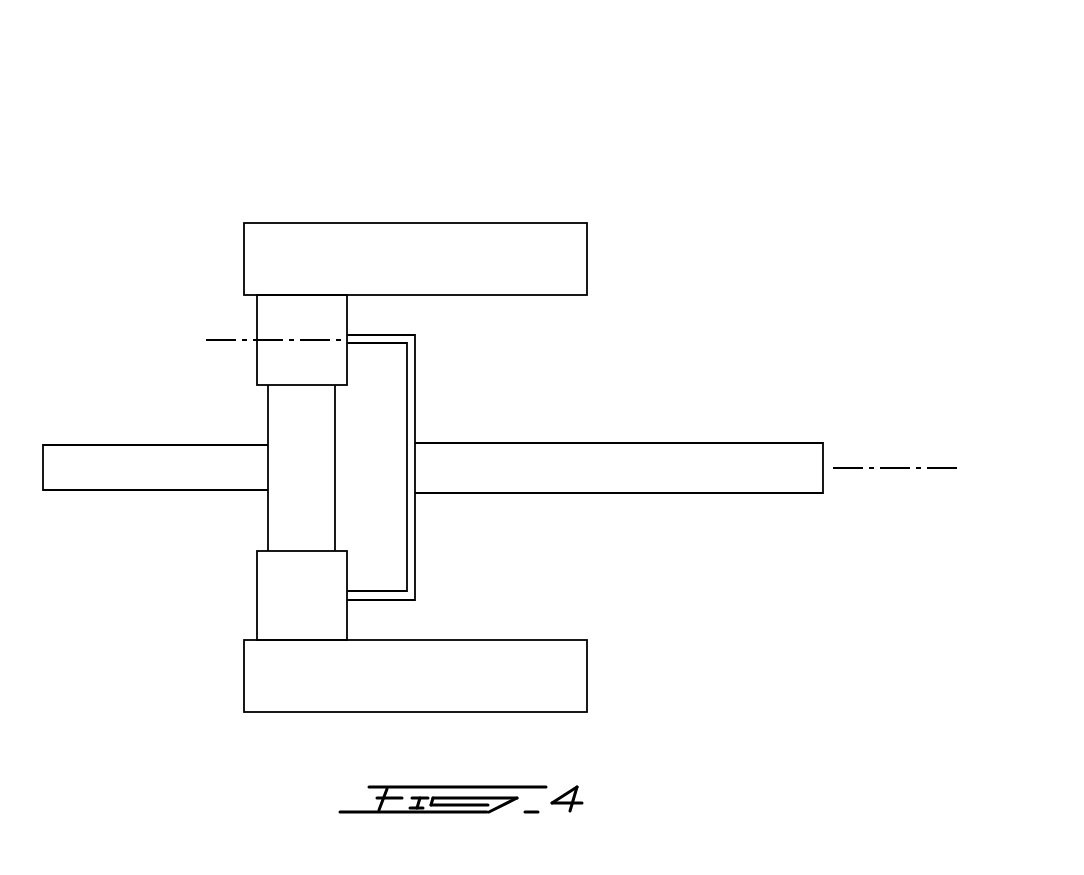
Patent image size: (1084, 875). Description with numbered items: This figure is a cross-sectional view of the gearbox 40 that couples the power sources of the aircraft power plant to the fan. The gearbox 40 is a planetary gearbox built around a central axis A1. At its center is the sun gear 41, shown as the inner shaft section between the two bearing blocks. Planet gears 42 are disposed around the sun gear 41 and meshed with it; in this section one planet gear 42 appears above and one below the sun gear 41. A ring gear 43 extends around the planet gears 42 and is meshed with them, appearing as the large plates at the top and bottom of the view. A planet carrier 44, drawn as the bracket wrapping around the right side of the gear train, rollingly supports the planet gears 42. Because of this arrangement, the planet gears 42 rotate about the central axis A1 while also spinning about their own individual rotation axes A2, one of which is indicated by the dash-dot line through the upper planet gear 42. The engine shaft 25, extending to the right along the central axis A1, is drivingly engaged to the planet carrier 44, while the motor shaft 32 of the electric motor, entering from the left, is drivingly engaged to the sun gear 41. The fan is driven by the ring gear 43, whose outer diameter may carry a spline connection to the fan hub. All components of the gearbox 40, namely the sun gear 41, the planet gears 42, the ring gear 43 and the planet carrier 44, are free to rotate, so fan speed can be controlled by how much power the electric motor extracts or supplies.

The gearbox 40 is at (543, 167).
The ring gear 43 is at (422, 260).
The sun gear 41 is at (298, 498).
The planet gears 42 is at (307, 602).
The planet carrier 44 is at (410, 389).
The motor shaft 32 is at (115, 463).
The engine shaft 25 is at (708, 468).
The central axis A1 is at (897, 468).
The individual rotation axis A2 is at (275, 340).